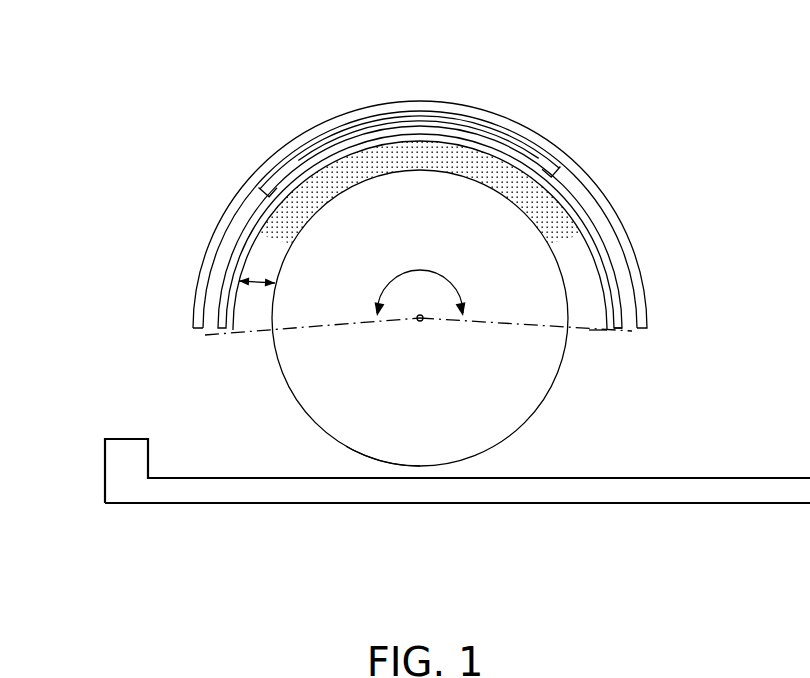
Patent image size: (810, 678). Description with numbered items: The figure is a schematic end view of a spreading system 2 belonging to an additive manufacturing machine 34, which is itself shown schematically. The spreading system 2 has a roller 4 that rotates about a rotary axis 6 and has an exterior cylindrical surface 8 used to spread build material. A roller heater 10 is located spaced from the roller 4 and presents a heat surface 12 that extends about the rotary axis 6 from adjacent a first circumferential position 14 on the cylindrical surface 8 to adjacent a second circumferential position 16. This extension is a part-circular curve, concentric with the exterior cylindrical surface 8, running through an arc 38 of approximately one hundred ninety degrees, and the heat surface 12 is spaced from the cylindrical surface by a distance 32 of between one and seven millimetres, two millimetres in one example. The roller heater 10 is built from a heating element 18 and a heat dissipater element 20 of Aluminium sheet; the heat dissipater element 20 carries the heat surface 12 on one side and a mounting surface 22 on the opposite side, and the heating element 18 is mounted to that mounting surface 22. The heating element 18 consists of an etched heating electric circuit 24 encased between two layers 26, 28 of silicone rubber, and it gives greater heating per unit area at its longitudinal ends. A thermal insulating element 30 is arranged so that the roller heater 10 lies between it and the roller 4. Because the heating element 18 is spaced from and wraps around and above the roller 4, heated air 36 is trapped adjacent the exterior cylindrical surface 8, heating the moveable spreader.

The spreading system 2 is at (135, 293).
The roller 4 is at (478, 410).
The rotary axis 6 is at (412, 326).
The exterior cylindrical surface 8 is at (345, 445).
The roller heater 10 is at (606, 202).
The heat surface 12 is at (589, 330).
The first circumferential position 14 is at (577, 336).
The second circumferential position 16 is at (275, 330).
The heating element 18 is at (580, 191).
The heat dissipater element 20 is at (622, 331).
The mounting surface 22 is at (619, 284).
The etched heating electric circuit 24 is at (466, 125).
The rubber layer 26 is at (532, 146).
The rubber layer 28 is at (560, 168).
The thermal insulating element 30 is at (621, 251).
The distance 32 is at (255, 284).
The additive manufacturing machine 34 is at (118, 85).
The air 36 is at (290, 222).
The arc 38 is at (448, 287).